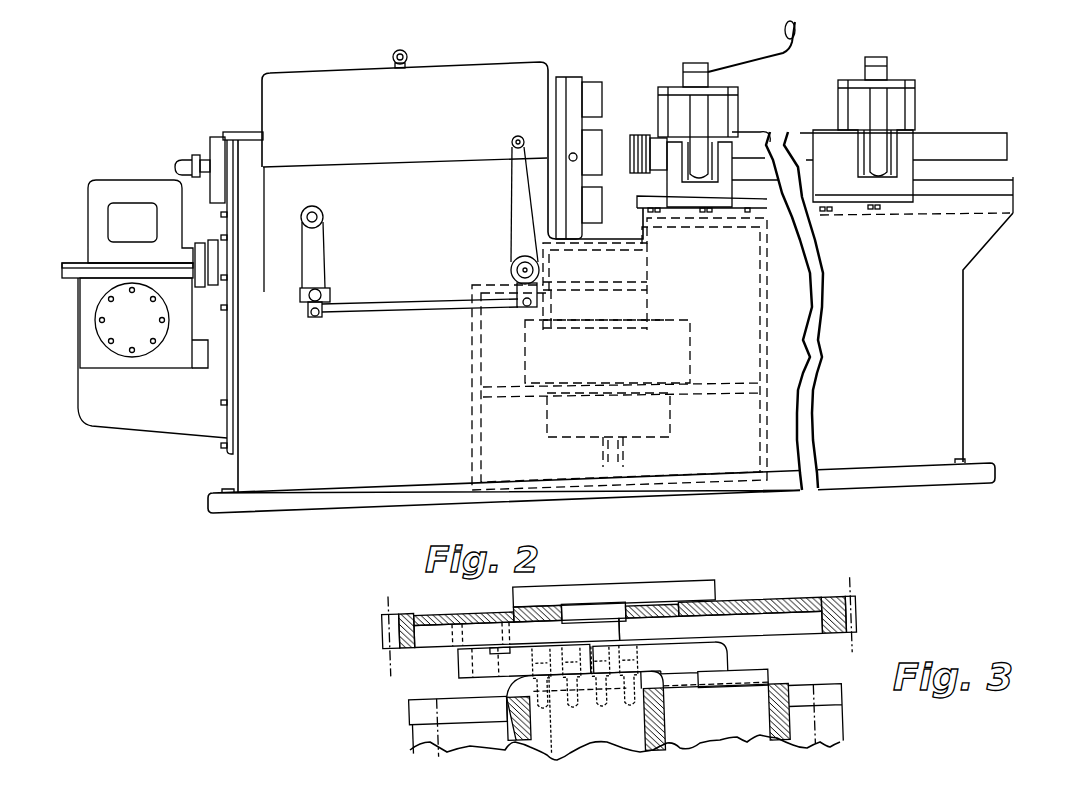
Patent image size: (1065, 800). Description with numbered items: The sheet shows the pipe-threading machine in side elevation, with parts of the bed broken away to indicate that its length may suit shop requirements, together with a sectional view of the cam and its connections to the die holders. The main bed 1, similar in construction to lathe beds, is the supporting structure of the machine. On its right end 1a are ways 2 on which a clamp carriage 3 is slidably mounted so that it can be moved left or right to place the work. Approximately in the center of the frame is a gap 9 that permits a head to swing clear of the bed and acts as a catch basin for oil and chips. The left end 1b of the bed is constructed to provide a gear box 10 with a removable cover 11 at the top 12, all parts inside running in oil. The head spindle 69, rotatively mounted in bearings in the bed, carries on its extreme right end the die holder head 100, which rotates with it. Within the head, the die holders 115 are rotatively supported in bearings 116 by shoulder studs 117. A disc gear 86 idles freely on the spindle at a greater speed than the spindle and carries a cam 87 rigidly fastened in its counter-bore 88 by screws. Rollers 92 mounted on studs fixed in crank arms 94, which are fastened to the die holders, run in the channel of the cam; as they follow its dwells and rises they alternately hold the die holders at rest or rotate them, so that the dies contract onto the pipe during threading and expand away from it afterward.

In FIG. 2, the main bed 1 is at (727, 380).
In FIG. 2, the right end of the bed 1a is at (940, 315).
In FIG. 2, the left end of the bed 1b is at (260, 430).
In FIG. 2, the ways 2 is at (997, 190).
In FIG. 2, the clamp carriage 3 is at (893, 187).
In FIG. 2, the gap 9 is at (627, 227).
In FIG. 2, the gear box 10 is at (293, 265).
In FIG. 2, the removable cover 11 is at (505, 82).
In FIG. 2, the top of the gear box 12 is at (432, 162).
In FIG. 2, the head spindle 69 is at (215, 133).
In FIG. 2, the die holder head 100 is at (568, 85).
In FIG. 2, the die holders 115 is at (592, 100).
In FIG. 3, the disc gear 86 is at (847, 602).
In FIG. 3, the cam 87 is at (797, 618).
In FIG. 3, the counter-bore 88 is at (721, 610).
In FIG. 3, the rollers 92 is at (477, 630).
In FIG. 3, the crank arms 94 is at (700, 652).
In FIG. 3, the bearings 116 is at (507, 705).
In FIG. 3, the shoulder studs 117 is at (537, 740).